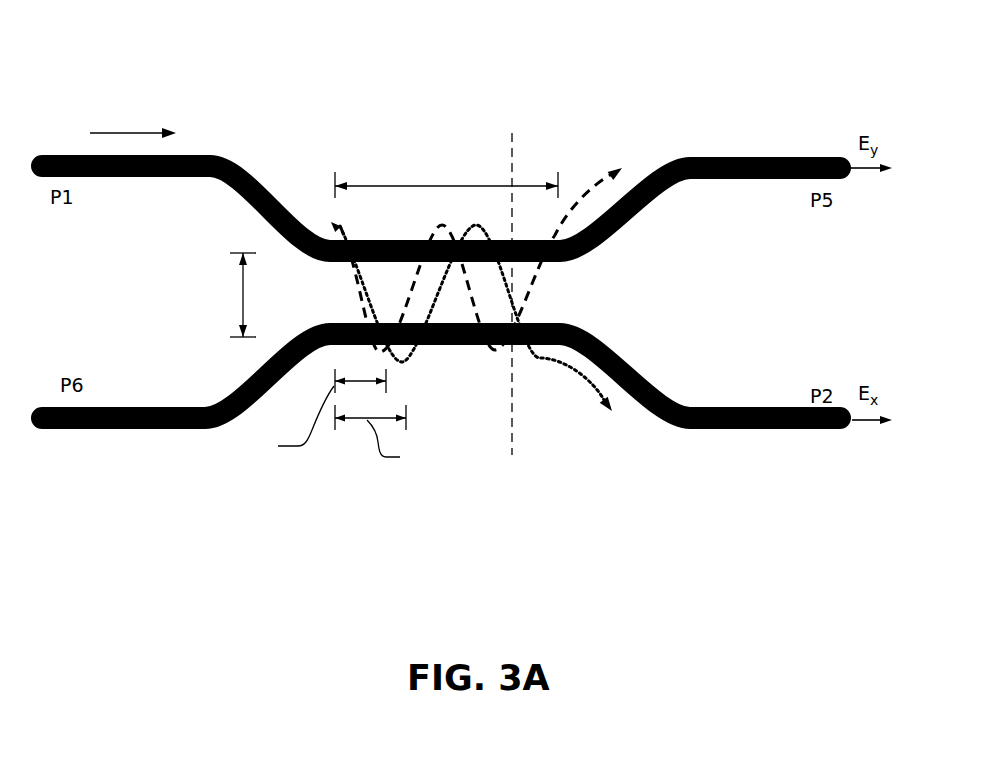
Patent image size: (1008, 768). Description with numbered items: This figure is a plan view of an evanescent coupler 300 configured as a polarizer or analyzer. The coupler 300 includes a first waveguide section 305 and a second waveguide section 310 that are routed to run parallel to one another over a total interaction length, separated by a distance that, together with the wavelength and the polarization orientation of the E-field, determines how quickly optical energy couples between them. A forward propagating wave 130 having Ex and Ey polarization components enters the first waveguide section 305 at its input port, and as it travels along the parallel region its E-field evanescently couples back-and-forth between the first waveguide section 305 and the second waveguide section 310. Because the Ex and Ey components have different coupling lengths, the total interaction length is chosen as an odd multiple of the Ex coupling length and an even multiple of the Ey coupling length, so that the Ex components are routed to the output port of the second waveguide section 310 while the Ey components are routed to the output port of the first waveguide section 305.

The evanescent coupler 300 is at (672, 63).
The first waveguide section 305 is at (210, 158).
The second waveguide section 310 is at (633, 372).
The forward propagating wave 130 is at (174, 129).